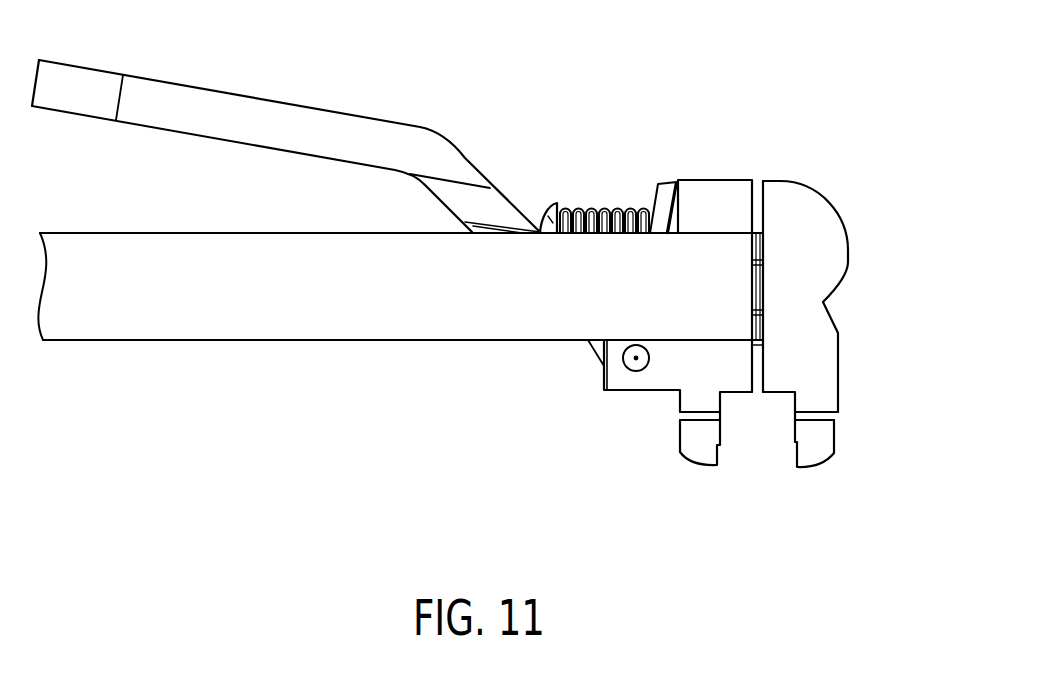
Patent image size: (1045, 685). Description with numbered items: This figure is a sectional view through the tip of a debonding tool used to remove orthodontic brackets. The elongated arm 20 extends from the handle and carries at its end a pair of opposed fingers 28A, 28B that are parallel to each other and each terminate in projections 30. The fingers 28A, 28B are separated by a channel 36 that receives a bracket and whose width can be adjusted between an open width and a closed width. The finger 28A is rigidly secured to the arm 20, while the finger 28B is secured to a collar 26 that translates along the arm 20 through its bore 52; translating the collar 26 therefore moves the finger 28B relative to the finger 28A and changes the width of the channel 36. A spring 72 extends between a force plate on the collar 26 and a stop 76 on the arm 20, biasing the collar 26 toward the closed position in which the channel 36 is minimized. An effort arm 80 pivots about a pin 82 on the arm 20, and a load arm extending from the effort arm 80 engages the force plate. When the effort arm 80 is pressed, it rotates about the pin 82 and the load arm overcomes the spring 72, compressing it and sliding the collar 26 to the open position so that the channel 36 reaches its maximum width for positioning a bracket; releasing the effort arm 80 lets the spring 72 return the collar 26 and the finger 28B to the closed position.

The arm 20 is at (427, 313).
The collar 26 is at (713, 203).
The finger 28A is at (822, 383).
The finger 28B is at (685, 392).
The projections 30 is at (692, 438).
The channel 36 is at (770, 481).
The bore 52 is at (690, 228).
The spring 72 is at (595, 207).
The stop 76 is at (547, 220).
The effort arm 80 is at (313, 123).
The pin 82 is at (623, 362).